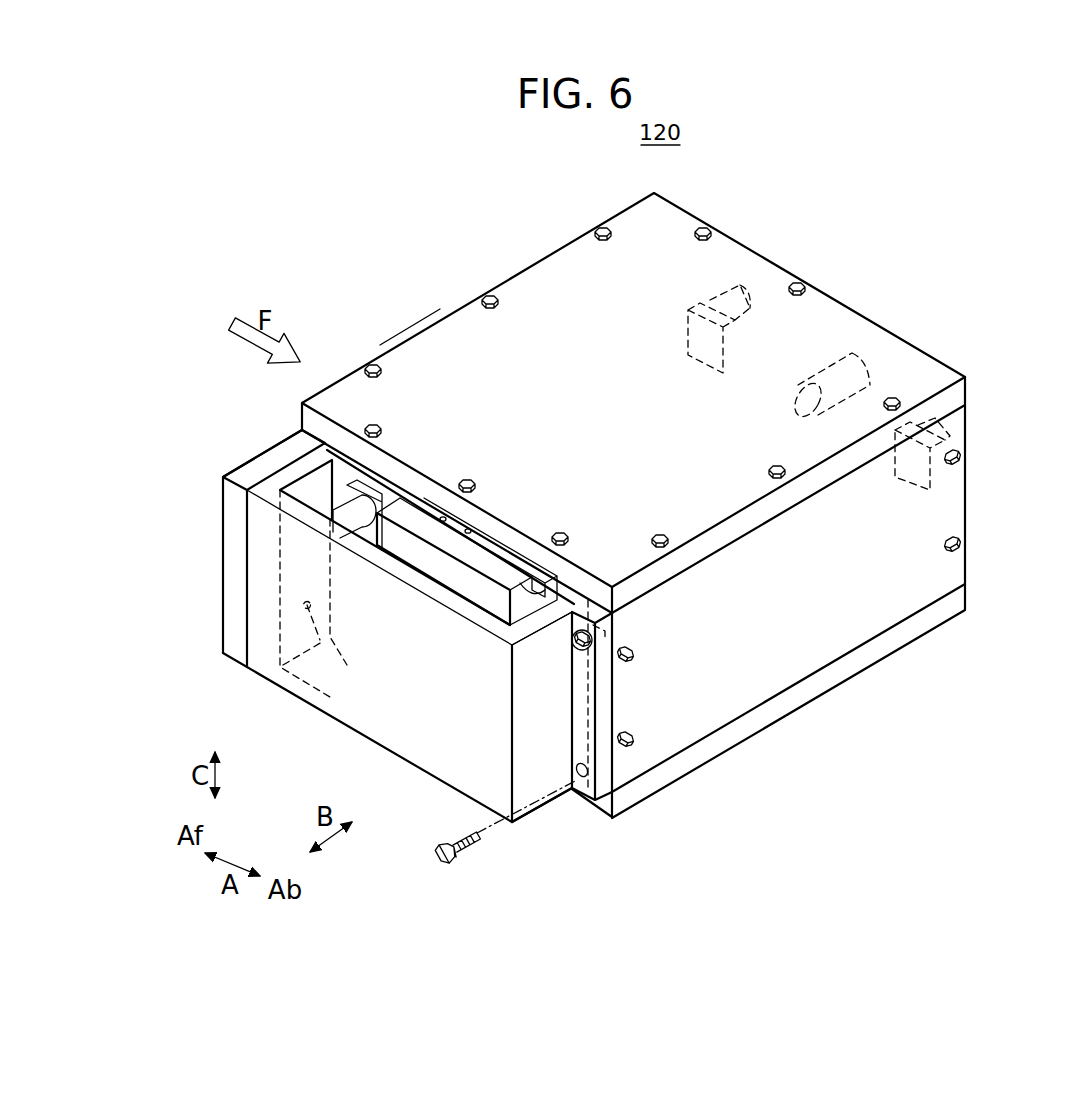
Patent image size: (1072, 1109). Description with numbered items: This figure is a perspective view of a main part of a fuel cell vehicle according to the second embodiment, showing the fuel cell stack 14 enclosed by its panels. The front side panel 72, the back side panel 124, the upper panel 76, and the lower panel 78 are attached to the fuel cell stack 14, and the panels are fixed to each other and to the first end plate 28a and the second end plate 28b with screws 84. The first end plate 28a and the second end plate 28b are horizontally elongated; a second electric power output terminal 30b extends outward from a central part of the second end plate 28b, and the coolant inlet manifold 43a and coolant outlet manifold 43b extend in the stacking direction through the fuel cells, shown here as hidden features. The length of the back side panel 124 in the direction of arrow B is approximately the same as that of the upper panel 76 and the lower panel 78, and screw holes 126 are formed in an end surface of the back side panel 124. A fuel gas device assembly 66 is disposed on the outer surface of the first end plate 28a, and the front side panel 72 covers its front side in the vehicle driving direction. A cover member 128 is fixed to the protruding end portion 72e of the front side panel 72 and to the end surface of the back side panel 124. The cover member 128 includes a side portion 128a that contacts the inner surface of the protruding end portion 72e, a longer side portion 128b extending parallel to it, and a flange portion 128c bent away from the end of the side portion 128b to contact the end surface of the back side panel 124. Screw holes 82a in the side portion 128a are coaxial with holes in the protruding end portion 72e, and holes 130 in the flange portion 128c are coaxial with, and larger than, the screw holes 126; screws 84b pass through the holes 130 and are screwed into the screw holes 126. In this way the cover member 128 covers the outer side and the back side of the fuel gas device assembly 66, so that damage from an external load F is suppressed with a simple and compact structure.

The fuel cell stack 14 is at (564, 290).
The back side panel 124 is at (775, 668).
The front side panel 72 is at (222, 640).
The protruding end portion 72e is at (277, 447).
The cover member 128 is at (430, 777).
The side portion 128a is at (303, 490).
The side portion 128b is at (532, 680).
The flange portion 128c is at (587, 787).
The fuel gas device assembly 66 is at (455, 570).
The screw holes 82a is at (331, 660).
The screw holes 126 is at (598, 762).
The lower panel 78 is at (598, 813).
The holes 130 is at (577, 770).
The screws 84 is at (485, 298).
The screws 84b is at (441, 858).
The upper panel 76 is at (414, 350).
The coolant inlet manifold 43a is at (688, 330).
The second electric power output terminal 30b is at (863, 368).
The coolant outlet manifold 43b is at (945, 478).
The second end plate 28b is at (947, 517).
The first end plate 28a is at (345, 474).